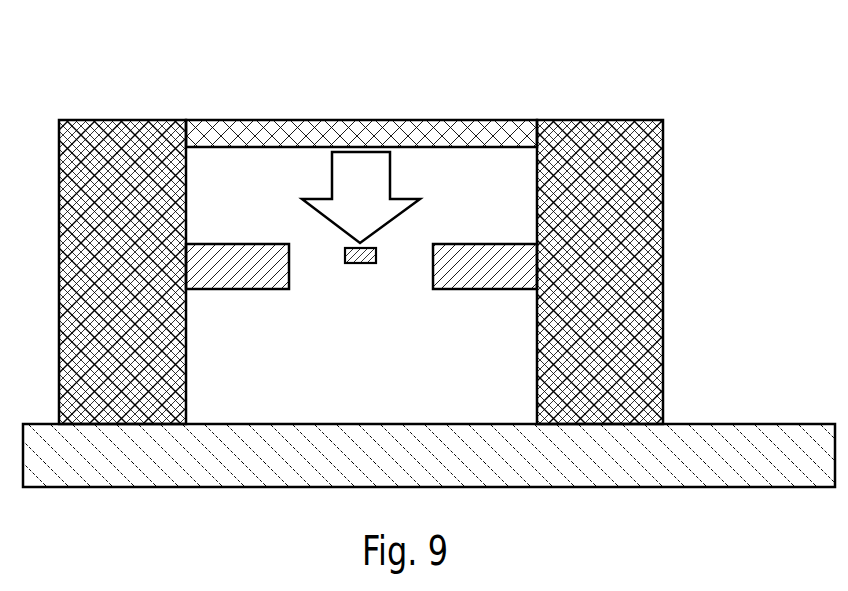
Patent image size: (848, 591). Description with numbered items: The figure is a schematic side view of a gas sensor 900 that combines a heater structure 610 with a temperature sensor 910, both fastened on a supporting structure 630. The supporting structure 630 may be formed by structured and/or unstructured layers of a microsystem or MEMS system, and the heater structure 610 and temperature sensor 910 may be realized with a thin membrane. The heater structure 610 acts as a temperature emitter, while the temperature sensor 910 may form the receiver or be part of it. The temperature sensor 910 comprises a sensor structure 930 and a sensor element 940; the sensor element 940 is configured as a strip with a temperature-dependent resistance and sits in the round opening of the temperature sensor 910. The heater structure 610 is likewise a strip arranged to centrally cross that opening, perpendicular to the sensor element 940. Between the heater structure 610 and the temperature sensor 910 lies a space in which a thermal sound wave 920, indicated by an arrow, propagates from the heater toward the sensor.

The gas sensor 900 is at (801, 38).
The heater structure 610 is at (357, 120).
The supporting structure 630 is at (663, 268).
The temperature sensor 910 is at (297, 230).
The thermal sound wave 920 is at (390, 170).
The sensor structure 930 is at (240, 289).
The sensor element 940 is at (360, 264).